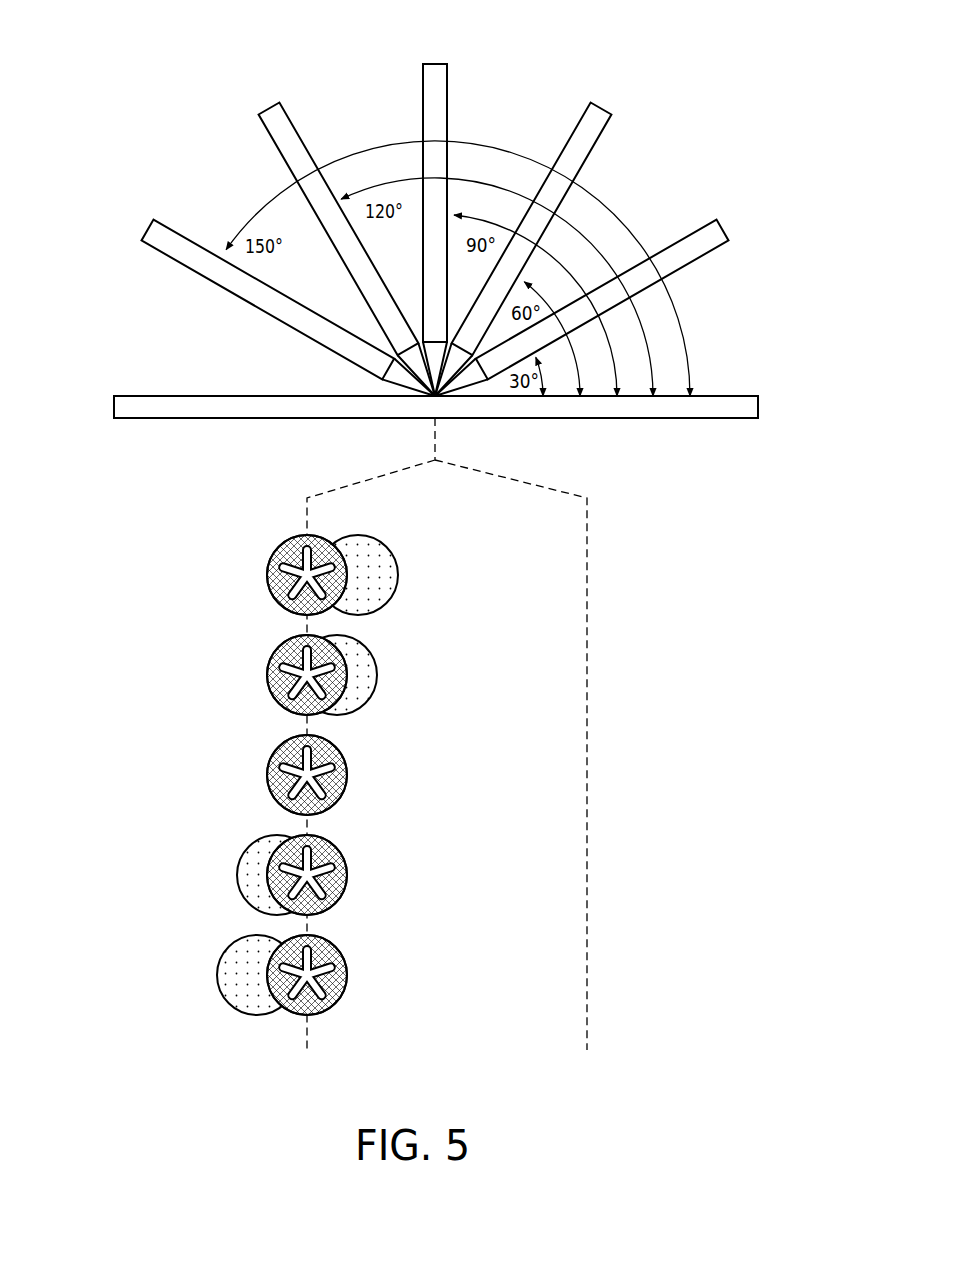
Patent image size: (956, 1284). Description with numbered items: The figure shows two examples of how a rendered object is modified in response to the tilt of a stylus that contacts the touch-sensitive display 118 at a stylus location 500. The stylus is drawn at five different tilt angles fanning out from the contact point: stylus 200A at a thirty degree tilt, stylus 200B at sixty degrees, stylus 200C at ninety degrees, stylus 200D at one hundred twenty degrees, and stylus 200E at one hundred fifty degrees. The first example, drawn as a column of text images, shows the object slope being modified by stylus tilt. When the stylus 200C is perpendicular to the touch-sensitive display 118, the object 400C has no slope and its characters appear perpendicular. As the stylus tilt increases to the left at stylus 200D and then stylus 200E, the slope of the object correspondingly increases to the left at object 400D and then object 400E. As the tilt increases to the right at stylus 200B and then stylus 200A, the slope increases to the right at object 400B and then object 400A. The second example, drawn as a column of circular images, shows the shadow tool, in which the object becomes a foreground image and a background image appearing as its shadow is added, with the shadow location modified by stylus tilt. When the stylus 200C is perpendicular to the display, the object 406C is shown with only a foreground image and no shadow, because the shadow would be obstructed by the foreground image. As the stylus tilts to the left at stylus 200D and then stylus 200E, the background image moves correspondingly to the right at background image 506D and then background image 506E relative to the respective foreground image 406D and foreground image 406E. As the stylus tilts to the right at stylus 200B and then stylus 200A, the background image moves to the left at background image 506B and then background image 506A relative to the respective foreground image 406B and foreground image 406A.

The touch-sensitive display 118 is at (758, 404).
The stylus 200A is at (728, 232).
The stylus 200B is at (624, 82).
The stylus 200C is at (430, 64).
The stylus 200D is at (268, 105).
The stylus 200E is at (143, 234).
The stylus location 500 is at (437, 400).
The foreground image 406A is at (347, 975).
The foreground image 406B is at (347, 872).
The object 406C is at (267, 777).
The foreground image 406D is at (267, 677).
The foreground image 406E is at (267, 577).
The background image 506A is at (217, 975).
The background image 506B is at (237, 875).
The background image 506D is at (370, 692).
The background image 506E is at (393, 592).
The object 400A is at (710, 958).
The object 400B is at (735, 876).
The object 400C is at (745, 783).
The object 400D is at (737, 697).
The object 400E is at (751, 580).